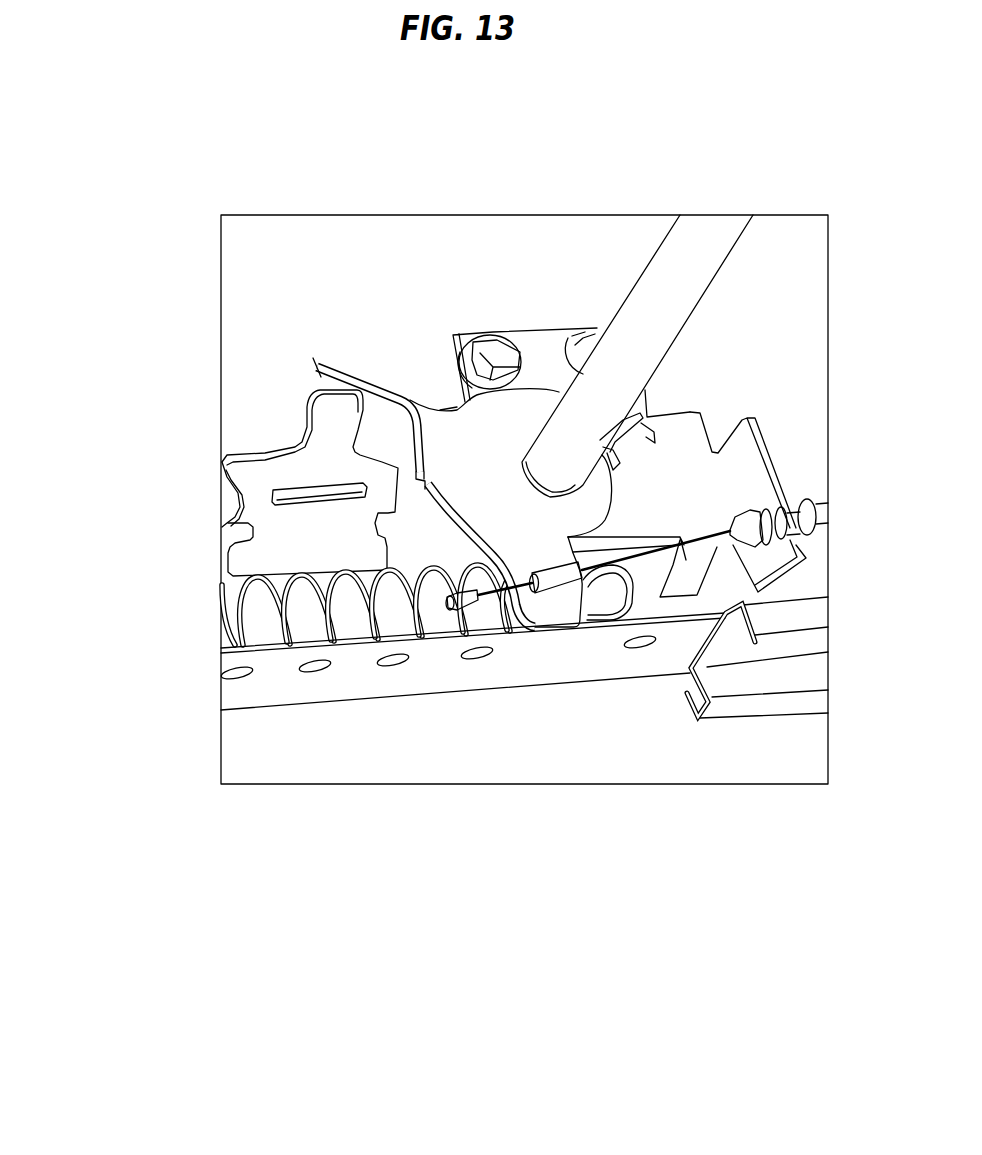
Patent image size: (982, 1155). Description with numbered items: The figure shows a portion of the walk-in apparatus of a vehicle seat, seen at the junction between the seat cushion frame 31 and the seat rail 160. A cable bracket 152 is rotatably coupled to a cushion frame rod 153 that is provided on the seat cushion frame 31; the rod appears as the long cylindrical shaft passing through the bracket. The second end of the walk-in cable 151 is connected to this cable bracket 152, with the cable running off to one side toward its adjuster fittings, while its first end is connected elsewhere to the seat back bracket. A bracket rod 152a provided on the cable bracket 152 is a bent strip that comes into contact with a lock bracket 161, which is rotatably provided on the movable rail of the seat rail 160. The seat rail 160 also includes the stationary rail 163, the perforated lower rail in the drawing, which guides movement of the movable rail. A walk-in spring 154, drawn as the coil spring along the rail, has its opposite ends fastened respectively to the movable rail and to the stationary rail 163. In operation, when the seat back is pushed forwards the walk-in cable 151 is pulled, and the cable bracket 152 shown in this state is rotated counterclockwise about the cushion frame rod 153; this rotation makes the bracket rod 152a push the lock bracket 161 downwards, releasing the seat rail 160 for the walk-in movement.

The seat cushion frame 31 is at (317, 288).
The walk-in cable 151 is at (638, 557).
The cable bracket 152 is at (507, 430).
The bracket rod 152a is at (375, 388).
The cushion frame rod 153 is at (672, 288).
The walk-in spring 154 is at (237, 627).
The seat rail 160 is at (357, 822).
The lock bracket 161 is at (333, 422).
The stationary rail 163 is at (437, 673).